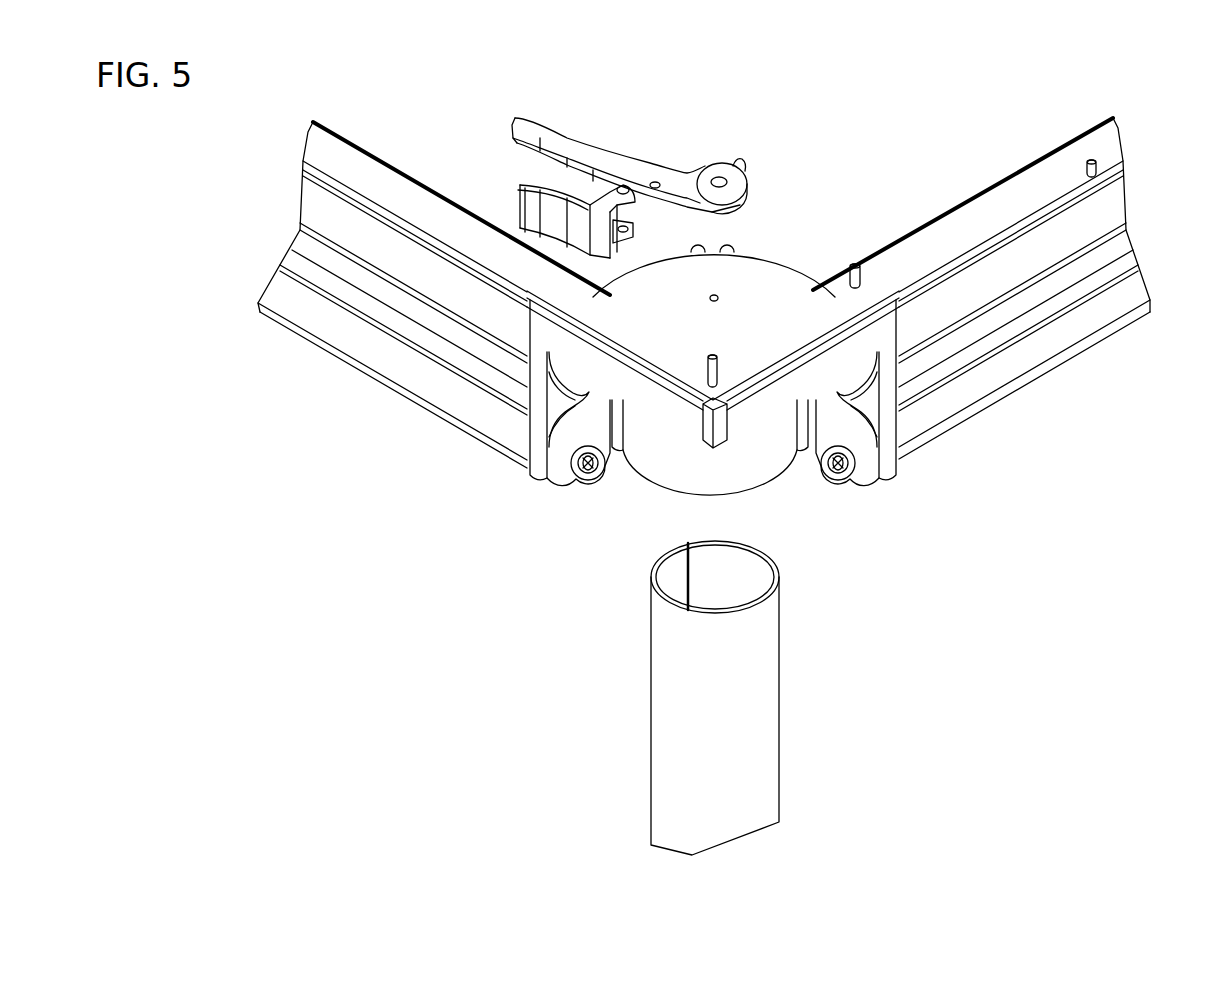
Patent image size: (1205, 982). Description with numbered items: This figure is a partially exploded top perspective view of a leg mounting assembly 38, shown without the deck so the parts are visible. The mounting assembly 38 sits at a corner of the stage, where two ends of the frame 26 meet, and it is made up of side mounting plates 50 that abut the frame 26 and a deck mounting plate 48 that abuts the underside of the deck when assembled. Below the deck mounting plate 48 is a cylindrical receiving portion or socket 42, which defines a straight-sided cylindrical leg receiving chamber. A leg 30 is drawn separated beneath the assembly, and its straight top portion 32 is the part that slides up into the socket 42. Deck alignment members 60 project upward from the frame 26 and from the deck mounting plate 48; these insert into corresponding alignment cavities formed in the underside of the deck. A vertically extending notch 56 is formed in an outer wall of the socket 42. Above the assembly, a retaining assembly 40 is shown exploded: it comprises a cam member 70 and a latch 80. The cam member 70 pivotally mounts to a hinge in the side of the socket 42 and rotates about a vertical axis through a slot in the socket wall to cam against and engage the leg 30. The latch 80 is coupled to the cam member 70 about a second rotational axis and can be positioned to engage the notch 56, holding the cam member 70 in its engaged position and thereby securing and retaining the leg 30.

The frame 26 is at (410, 368).
The leg 30 is at (630, 698).
The straight top portion 32 is at (768, 688).
The leg mounting assembly 38 is at (822, 218).
The retaining assembly 40 is at (750, 138).
The socket 42 is at (735, 482).
The deck mounting plate 48 is at (690, 339).
The side mounting plate 50 is at (540, 430).
The notch 56 is at (587, 470).
The deck alignment member 60 is at (716, 378).
The cam member 70 is at (543, 138).
The latch 80 is at (530, 208).